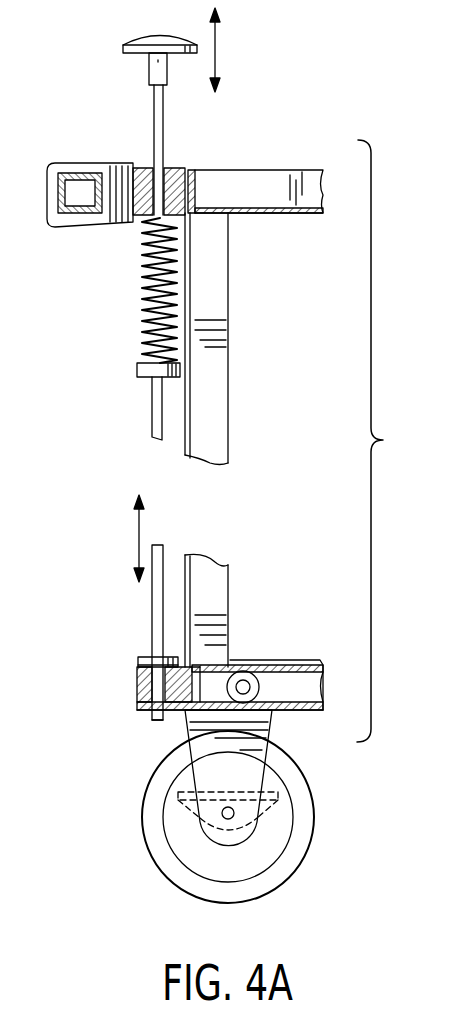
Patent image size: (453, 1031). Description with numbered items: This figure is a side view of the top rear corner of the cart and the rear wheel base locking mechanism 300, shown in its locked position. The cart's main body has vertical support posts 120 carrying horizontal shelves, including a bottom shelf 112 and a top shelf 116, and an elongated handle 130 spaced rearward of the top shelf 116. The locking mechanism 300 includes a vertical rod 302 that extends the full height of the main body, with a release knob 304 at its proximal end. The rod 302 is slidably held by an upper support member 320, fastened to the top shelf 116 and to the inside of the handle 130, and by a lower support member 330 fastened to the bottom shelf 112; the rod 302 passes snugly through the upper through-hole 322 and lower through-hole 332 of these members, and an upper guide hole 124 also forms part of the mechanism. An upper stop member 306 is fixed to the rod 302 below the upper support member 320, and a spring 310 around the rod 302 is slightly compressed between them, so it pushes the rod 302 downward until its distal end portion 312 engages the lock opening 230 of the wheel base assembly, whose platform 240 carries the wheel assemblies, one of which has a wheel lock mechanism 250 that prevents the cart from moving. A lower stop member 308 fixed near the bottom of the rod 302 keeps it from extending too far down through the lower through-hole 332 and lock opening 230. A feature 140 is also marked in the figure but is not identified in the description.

The locking mechanism 300 is at (300, 80).
The release knob 304 is at (141, 33).
The upper guide hole 124 is at (166, 166).
The handle 130 is at (73, 162).
The upper through-hole 322 is at (140, 167).
The upper support member 320 is at (178, 167).
The top shelf 116 is at (296, 188).
The vertical support post 120 is at (215, 595).
The spring 310 is at (142, 277).
The upper stop member 306 is at (137, 370).
The vertical rod 302 is at (152, 412).
The lower stop member 308 is at (152, 657).
The lower support member 330 is at (138, 670).
The lower through-hole 332 is at (137, 690).
The bottom shelf 112 is at (298, 662).
The aperture 140 is at (246, 671).
The lock opening 230 is at (148, 713).
The platform 240 is at (293, 710).
The distal end portion 312 is at (162, 736).
The wheel lock mechanism 250 is at (272, 810).